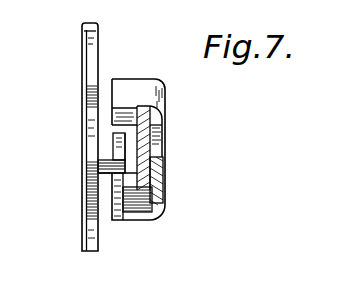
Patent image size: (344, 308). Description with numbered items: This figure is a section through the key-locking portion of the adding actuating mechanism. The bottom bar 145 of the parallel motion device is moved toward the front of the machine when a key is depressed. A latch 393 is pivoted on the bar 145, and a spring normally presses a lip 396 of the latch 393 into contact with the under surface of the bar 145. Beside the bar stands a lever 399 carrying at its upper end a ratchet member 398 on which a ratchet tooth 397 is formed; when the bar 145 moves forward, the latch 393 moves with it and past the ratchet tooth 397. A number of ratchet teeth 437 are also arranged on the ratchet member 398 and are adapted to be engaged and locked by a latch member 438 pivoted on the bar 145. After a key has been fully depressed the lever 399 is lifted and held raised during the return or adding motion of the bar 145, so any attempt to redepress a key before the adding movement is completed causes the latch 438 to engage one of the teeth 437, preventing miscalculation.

The lever 399 is at (82, 83).
The latch member 438 is at (133, 88).
The bottom bar 145 is at (158, 126).
The ratchet member 398 is at (155, 152).
The lip 396 is at (150, 190).
The latch 393 is at (166, 203).
The ratchet teeth 437 is at (113, 141).
The ratchet tooth 397 is at (117, 196).